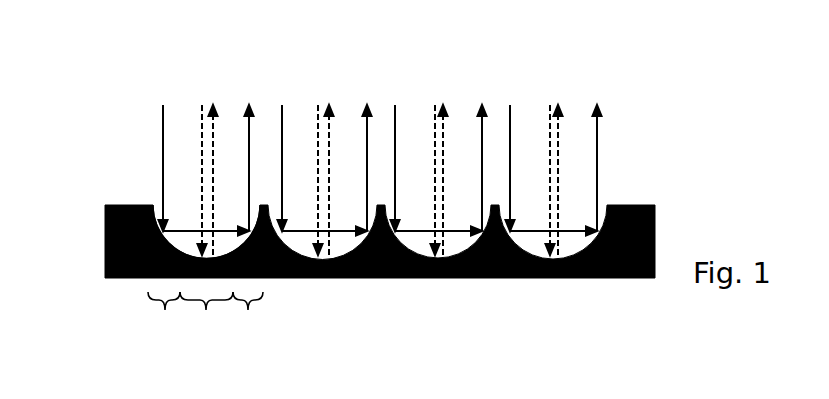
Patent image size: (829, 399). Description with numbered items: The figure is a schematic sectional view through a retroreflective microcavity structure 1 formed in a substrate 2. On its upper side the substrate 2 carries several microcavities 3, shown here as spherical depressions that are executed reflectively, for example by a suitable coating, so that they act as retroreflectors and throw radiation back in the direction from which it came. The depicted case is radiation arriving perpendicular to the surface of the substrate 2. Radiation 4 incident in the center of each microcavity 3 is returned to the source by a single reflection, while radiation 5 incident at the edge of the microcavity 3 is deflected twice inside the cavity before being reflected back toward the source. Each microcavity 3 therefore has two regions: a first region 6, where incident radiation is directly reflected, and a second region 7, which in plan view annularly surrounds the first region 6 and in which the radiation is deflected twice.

The retroreflective microcavity structure 1 is at (94, 313).
The substrate 2 is at (612, 278).
The microcavities 3 is at (155, 208).
The radiation incident in the center of the microcavity 4 is at (202, 108).
The radiation incident at the edge of the microcavity 5 is at (163, 108).
The first region 6 is at (206, 319).
The second region 7 is at (205, 319).